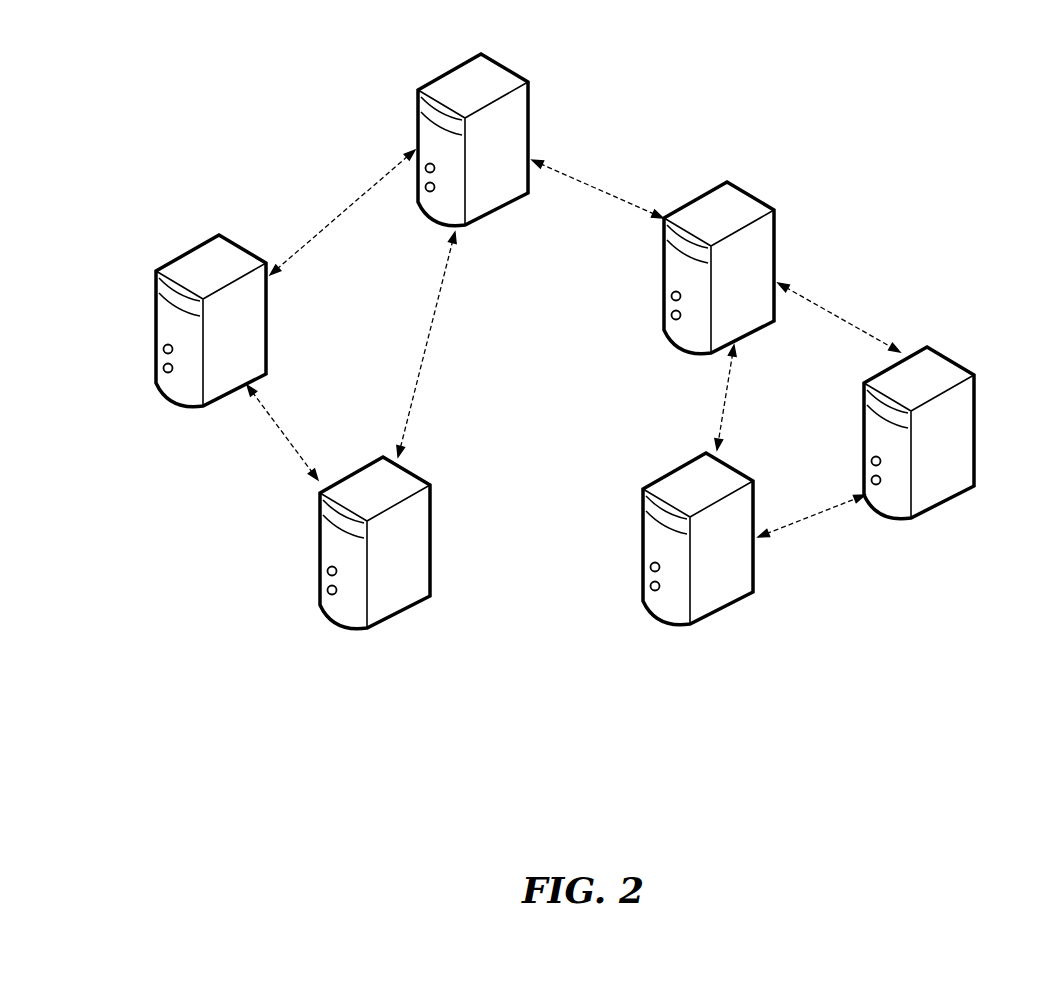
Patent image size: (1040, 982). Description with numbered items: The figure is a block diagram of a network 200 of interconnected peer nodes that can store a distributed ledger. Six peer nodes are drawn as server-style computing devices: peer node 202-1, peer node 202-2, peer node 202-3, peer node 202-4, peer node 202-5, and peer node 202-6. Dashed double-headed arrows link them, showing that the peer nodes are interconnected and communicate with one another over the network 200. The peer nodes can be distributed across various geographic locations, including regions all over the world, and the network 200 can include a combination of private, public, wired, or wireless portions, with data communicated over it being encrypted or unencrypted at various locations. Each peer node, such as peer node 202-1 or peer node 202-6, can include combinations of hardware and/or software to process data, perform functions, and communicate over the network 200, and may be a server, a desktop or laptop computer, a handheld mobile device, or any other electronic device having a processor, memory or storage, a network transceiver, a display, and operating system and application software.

The network 200 is at (977, 65).
The peer node 202-1 is at (192, 245).
The peer node 202-2 is at (507, 205).
The peer node 202-3 is at (385, 620).
The peer node 202-4 is at (716, 183).
The peer node 202-5 is at (717, 612).
The peer node 202-6 is at (928, 345).